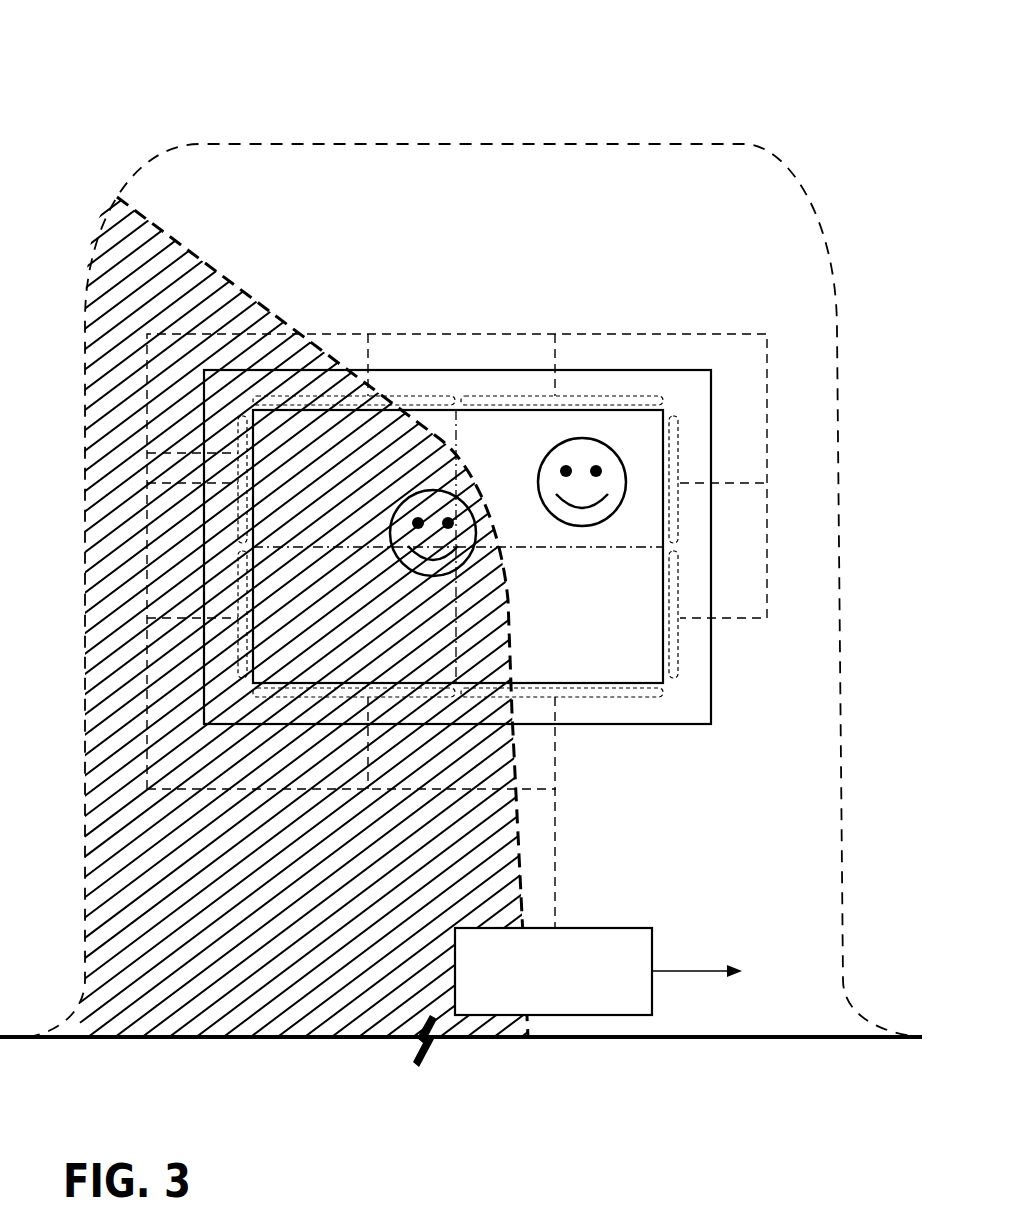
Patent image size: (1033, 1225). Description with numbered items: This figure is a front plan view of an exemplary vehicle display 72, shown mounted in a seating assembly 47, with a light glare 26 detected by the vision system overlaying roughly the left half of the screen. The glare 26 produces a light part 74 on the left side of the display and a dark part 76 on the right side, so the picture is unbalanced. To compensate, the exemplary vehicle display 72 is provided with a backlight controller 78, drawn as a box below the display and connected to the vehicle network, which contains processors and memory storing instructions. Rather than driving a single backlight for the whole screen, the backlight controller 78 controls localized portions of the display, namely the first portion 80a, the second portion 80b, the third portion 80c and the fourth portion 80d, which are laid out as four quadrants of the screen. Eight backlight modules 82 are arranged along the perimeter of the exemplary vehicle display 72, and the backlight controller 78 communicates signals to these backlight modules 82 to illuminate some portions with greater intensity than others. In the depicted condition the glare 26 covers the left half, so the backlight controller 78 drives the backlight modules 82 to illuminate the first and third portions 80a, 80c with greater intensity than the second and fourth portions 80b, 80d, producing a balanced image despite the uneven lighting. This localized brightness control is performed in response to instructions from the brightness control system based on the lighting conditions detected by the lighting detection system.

The glare 26 is at (118, 363).
The seating assembly 47 is at (192, 145).
The exemplary vehicle display 72 is at (688, 368).
The light part 74 is at (345, 456).
The dark part 76 is at (590, 655).
The backlight controller 78 is at (634, 1017).
The first portion 80a is at (325, 496).
The second portion 80b is at (487, 496).
The third portion 80c is at (325, 630).
The fourth portion 80d is at (530, 630).
The backlight module 82 is at (313, 395).